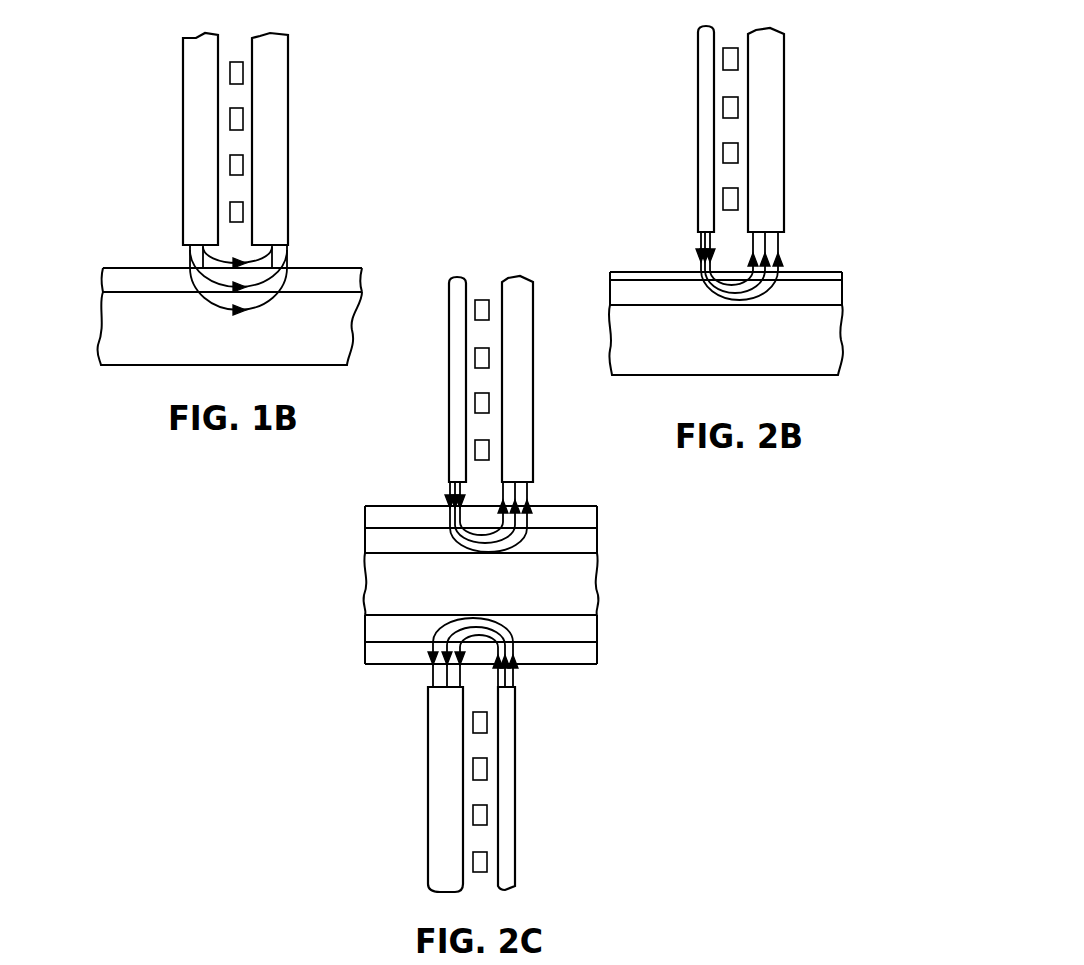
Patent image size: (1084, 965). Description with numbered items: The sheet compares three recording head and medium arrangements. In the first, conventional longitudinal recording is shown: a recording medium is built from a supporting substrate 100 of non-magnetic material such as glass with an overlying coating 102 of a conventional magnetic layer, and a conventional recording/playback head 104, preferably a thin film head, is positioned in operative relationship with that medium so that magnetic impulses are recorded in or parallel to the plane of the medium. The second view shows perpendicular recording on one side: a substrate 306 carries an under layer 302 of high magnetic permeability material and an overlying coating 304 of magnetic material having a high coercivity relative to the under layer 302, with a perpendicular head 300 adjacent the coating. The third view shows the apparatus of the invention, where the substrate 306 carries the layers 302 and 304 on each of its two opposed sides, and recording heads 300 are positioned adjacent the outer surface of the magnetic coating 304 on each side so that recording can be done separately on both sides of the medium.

In FIG. 1B, the supporting substrate 100 is at (115, 350).
In FIG. 1B, the overlying coating 102 is at (146, 278).
In FIG. 1B, the recording/playback head 104 is at (184, 136).
In FIG. 2B, the perpendicular head 300 is at (698, 155).
In FIG. 2C, the perpendicular head 300 is at (537, 413).
In FIG. 2B, the under layer 302 is at (617, 292).
In FIG. 2C, the under layer 302 is at (582, 543).
In FIG. 2B, the overlying coating of magnetic material 304 is at (635, 272).
In FIG. 2C, the overlying coating of magnetic material 304 is at (588, 518).
In FIG. 2B, the substrate 306 is at (697, 362).
In FIG. 2C, the substrate 306 is at (592, 587).